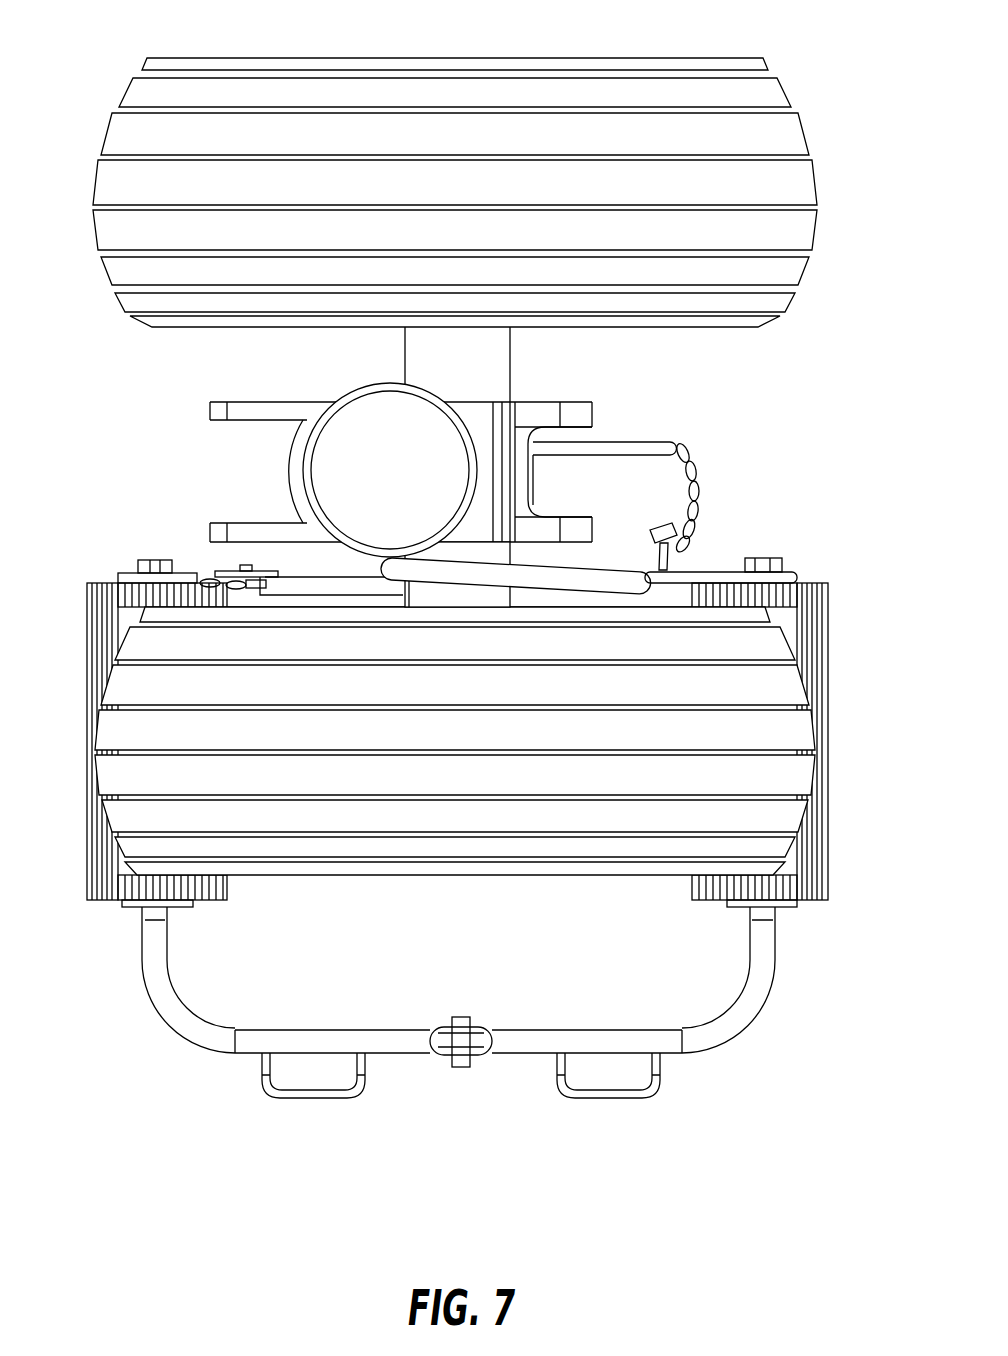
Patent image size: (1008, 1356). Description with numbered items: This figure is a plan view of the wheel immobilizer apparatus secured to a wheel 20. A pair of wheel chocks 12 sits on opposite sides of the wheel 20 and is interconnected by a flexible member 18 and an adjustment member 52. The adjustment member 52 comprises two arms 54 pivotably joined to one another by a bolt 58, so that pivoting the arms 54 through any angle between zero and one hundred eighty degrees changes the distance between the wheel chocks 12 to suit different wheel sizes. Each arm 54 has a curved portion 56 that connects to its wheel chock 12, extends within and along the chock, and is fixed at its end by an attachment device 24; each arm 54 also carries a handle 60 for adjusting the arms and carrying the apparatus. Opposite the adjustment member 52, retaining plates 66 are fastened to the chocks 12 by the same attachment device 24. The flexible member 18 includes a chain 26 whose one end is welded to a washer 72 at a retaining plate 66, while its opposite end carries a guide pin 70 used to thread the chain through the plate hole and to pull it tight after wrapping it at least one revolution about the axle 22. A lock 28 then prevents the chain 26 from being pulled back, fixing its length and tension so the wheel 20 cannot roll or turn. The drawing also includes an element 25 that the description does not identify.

The wheel chock 12 is at (100, 855).
The flexible member 18 is at (247, 560).
The wheel 20 is at (585, 93).
The axle 22 is at (462, 368).
The attachment device 24 is at (163, 558).
The pin 25 is at (560, 570).
The chain 26 is at (702, 465).
The lock 28 is at (708, 526).
The adjustment member 52 is at (464, 1044).
The arm 54 is at (415, 1045).
The curved portion 56 is at (178, 1000).
The bolt 58 is at (460, 1017).
The handle 60 is at (310, 1100).
The retaining plate 66 is at (210, 577).
The guide pin 70 is at (625, 447).
The washer 72 is at (312, 570).